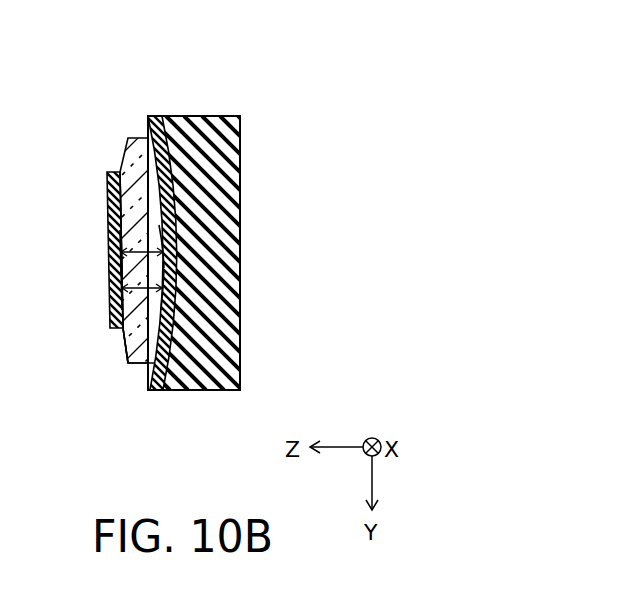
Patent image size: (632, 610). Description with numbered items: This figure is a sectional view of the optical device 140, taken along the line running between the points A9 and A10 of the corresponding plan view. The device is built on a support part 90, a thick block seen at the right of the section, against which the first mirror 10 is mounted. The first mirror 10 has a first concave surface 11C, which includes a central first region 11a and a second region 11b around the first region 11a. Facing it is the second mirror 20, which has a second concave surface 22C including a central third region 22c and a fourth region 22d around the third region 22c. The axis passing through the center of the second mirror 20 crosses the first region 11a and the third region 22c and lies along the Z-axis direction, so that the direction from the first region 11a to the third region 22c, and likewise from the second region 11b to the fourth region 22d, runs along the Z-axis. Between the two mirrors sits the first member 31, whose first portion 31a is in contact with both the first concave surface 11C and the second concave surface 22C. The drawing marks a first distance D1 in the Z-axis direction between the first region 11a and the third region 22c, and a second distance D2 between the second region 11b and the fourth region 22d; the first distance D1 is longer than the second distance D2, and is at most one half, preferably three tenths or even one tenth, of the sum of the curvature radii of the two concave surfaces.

The optical device 140 is at (299, 82).
The support part 90 is at (202, 126).
The section line end A10 is at (209, 99).
The section line end A9 is at (202, 405).
The first mirror 10 is at (151, 123).
The first concave surface 11C is at (147, 161).
The second concave surface 22C is at (120, 212).
The second mirror 20 is at (108, 230).
The third region 22c is at (117, 252).
The fourth region 22d is at (119, 289).
The first portion 31a is at (136, 309).
The first member 31 is at (128, 350).
The first distance D1 is at (146, 250).
The first region 11a is at (167, 250).
The second distance D2 is at (142, 288).
The second region 11b is at (160, 289).